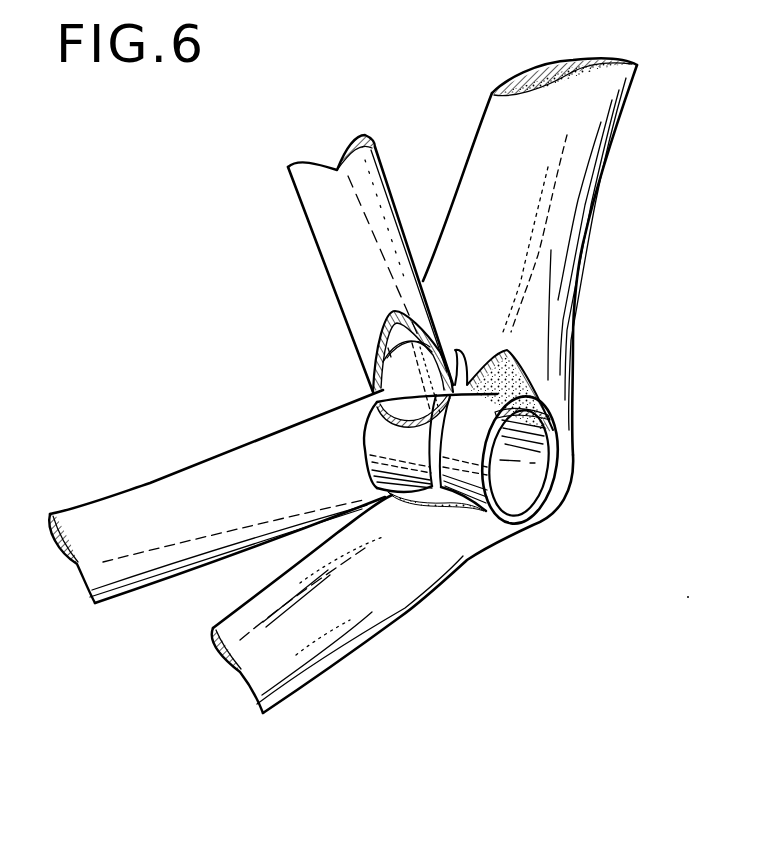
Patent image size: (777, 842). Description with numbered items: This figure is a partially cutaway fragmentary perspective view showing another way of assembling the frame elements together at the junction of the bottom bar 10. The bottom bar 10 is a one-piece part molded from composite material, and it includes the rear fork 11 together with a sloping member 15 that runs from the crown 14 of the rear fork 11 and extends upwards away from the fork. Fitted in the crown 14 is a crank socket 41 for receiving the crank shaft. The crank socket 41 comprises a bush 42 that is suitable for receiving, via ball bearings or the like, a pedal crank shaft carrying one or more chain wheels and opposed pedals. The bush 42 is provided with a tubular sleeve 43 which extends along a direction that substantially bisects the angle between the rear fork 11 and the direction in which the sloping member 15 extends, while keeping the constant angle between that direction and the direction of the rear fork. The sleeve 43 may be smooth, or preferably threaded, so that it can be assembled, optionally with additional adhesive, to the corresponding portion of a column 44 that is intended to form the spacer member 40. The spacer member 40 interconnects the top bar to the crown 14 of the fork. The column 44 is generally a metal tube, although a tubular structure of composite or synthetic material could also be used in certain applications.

The bottom bar 10 is at (592, 290).
The rear fork 11 is at (184, 468).
The crown of the rear fork 14 is at (465, 531).
The sloping member 15 is at (489, 109).
The spacer member 40 is at (297, 204).
The crank socket 41 is at (352, 465).
The bush 42 is at (362, 447).
The tubular sleeve 43 is at (373, 401).
The column 44 is at (332, 274).